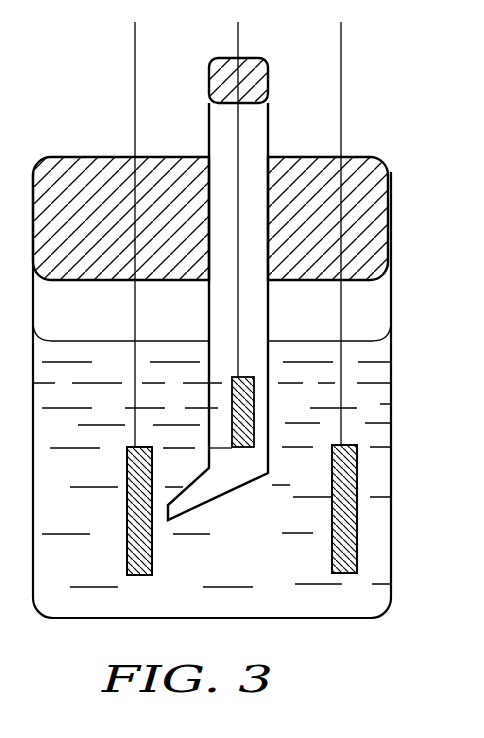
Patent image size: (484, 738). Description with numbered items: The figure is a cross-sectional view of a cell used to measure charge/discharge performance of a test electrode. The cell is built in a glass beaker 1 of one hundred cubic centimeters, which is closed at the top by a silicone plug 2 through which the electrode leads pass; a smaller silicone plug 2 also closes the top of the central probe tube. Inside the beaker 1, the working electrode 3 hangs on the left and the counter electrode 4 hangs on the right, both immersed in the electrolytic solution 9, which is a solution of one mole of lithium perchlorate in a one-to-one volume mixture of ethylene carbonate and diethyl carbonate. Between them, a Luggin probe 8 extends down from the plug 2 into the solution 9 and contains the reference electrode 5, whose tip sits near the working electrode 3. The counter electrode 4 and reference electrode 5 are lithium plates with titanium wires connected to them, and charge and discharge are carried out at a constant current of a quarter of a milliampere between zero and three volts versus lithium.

The glass beaker 1 is at (391, 302).
The silicone plug 2 is at (268, 76).
The working electrode 3 is at (137, 520).
The counter electrode 4 is at (348, 518).
The reference electrode 5 is at (228, 478).
The Luggin probe 8 is at (222, 318).
The electrolytic solution 9 is at (380, 404).